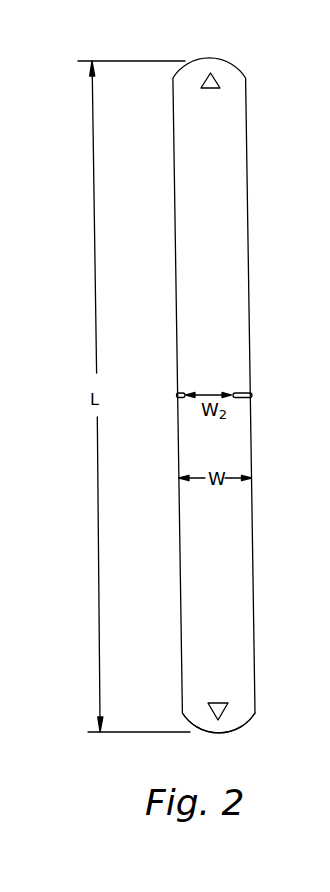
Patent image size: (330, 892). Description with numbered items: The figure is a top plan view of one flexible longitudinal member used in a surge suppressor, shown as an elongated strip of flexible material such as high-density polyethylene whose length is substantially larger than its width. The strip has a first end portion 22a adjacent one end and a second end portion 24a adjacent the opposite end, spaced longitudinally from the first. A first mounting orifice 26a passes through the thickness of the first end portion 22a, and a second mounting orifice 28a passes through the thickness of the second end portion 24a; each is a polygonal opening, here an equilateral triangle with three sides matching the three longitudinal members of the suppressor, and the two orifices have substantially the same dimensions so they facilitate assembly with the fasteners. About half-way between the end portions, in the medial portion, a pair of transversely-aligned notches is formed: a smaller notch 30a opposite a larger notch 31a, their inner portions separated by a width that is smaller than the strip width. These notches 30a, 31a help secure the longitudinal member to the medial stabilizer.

The first end portion 22a is at (235, 97).
The second end portion 24a is at (240, 692).
The first mounting orifice 26a is at (212, 72).
The second mounting orifice 28a is at (219, 719).
The smaller notch 30a is at (177, 395).
The larger notch 31a is at (252, 395).